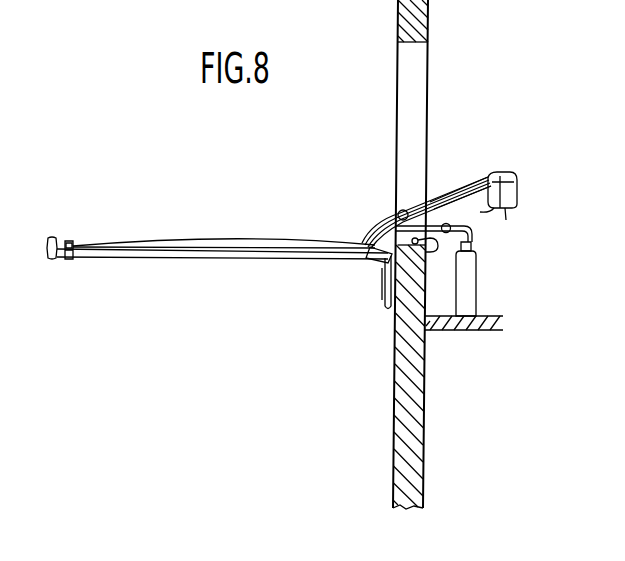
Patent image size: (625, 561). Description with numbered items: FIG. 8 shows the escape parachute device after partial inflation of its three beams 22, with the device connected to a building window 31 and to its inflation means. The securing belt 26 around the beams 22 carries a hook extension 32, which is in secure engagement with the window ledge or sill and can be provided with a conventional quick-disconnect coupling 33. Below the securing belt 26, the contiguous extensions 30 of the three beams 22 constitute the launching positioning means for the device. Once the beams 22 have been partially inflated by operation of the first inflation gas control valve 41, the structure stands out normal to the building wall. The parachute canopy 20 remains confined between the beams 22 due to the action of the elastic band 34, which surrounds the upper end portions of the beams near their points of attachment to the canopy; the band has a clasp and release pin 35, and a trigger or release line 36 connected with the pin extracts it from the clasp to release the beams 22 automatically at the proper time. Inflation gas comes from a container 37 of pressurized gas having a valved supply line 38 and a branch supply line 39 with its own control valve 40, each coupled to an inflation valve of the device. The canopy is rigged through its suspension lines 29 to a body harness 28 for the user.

The parachute canopy 20 is at (52, 257).
The beams 22 is at (246, 252).
The securing belt 26 is at (373, 253).
The body harness 28 is at (506, 178).
The suspension lines 29 is at (465, 186).
The contiguous extensions of the beams 30 is at (378, 300).
The building window 31 is at (414, 92).
The hook extension 32 is at (477, 258).
The quick-disconnect coupling 33 is at (430, 258).
The elastic band 34 is at (70, 260).
The clasp and release pin 35 is at (70, 242).
The trigger or release line 36 is at (232, 238).
The container of pressurized inflation gas 37 is at (467, 282).
The valved supply line 38 is at (473, 232).
The branch supply line 39 is at (380, 222).
The control valve 40 is at (403, 209).
The first inflation gas control valve 41 is at (449, 224).